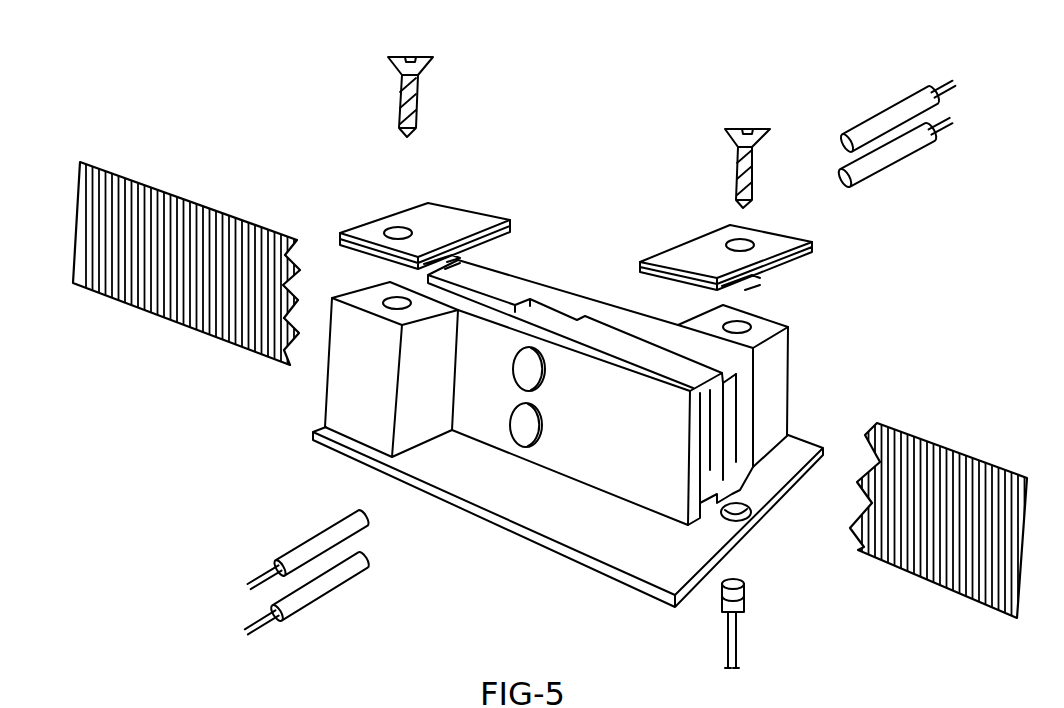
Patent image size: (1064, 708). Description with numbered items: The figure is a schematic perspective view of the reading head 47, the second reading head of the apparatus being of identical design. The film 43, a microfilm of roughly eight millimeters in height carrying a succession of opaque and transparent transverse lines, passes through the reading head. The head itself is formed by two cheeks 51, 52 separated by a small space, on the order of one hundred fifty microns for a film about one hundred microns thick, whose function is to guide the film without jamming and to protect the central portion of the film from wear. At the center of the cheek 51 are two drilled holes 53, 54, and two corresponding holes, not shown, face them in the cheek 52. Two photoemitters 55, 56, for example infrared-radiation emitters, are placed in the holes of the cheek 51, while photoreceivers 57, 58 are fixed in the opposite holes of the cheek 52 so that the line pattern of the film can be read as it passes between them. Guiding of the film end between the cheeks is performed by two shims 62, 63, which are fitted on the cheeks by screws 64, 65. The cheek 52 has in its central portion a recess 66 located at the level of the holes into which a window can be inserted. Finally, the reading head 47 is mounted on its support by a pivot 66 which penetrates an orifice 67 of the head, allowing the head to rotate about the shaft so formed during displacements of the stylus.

The film 43 is at (203, 330).
The reading head 47 is at (615, 560).
The cheek 51 is at (483, 430).
The cheek 52 is at (515, 278).
The drilled hole 53 is at (542, 432).
The drilled hole 54 is at (547, 378).
The photoemitter 55 is at (348, 587).
The photoemitter 56 is at (300, 550).
The photoreceiver 57 is at (908, 157).
The photoreceiver 58 is at (882, 115).
The shim 62 is at (378, 227).
The shim 63 is at (678, 250).
The screw 64 is at (400, 90).
The screw 65 is at (735, 173).
The recess / pivot 66 is at (738, 607).
The orifice 67 is at (752, 507).